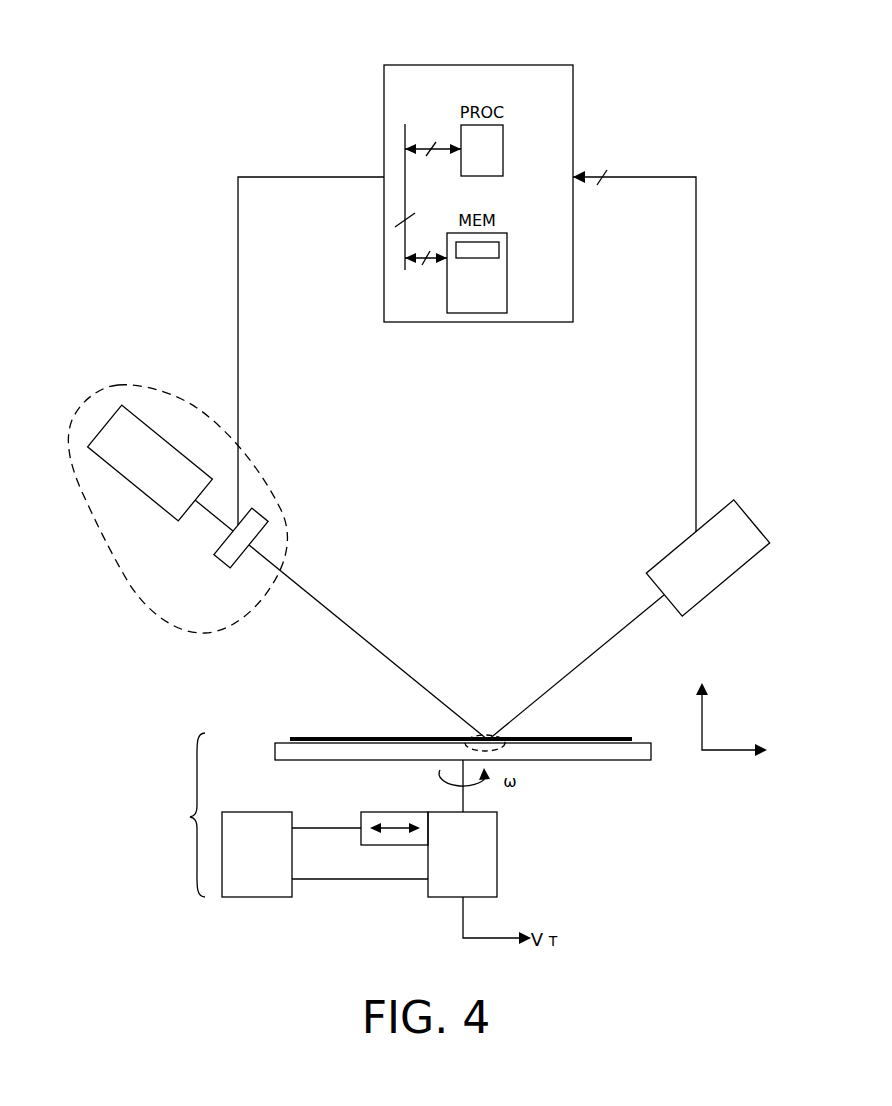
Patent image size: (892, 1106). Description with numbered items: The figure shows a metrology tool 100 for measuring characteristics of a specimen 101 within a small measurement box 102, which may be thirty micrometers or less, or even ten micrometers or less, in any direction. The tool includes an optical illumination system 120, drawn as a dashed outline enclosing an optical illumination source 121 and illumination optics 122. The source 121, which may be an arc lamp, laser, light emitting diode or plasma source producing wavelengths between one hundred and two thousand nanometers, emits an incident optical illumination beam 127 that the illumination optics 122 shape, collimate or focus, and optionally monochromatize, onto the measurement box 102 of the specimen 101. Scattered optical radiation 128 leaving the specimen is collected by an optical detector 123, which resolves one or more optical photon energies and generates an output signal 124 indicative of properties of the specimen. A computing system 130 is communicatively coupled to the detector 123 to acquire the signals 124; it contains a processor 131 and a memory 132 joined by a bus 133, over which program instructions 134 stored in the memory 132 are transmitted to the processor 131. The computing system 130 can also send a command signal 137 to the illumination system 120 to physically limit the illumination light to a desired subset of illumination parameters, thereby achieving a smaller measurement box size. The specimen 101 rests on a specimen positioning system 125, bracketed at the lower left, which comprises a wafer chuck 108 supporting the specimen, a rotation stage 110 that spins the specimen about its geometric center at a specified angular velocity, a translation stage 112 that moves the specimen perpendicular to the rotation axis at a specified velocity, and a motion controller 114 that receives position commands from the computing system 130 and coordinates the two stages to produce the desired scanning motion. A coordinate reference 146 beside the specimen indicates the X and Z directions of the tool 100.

The metrology tool 100 is at (79, 86).
The specimen 101 is at (625, 737).
The measurement box 102 is at (508, 740).
The wafer chuck 108 is at (275, 752).
The rotation stage 110 is at (450, 864).
The translation stage 112 is at (361, 812).
The motion controller 114 is at (244, 864).
The optical illumination system 120 is at (118, 385).
The optical illumination source 121 is at (139, 476).
The illumination optics 122 is at (217, 563).
The optical detector 123 is at (692, 569).
The output signal 124 is at (617, 163).
The specimen positioning system 125 is at (188, 817).
The incident optical illumination beam 127 is at (317, 603).
The scattered optical radiation 128 is at (600, 652).
The computing system 130 is at (465, 87).
The processor 131 is at (503, 149).
The memory 132 is at (447, 300).
The bus 133 is at (405, 193).
The program instructions 134 is at (499, 249).
The command signal 137 is at (225, 222).
The coordinate system 146 is at (705, 752).